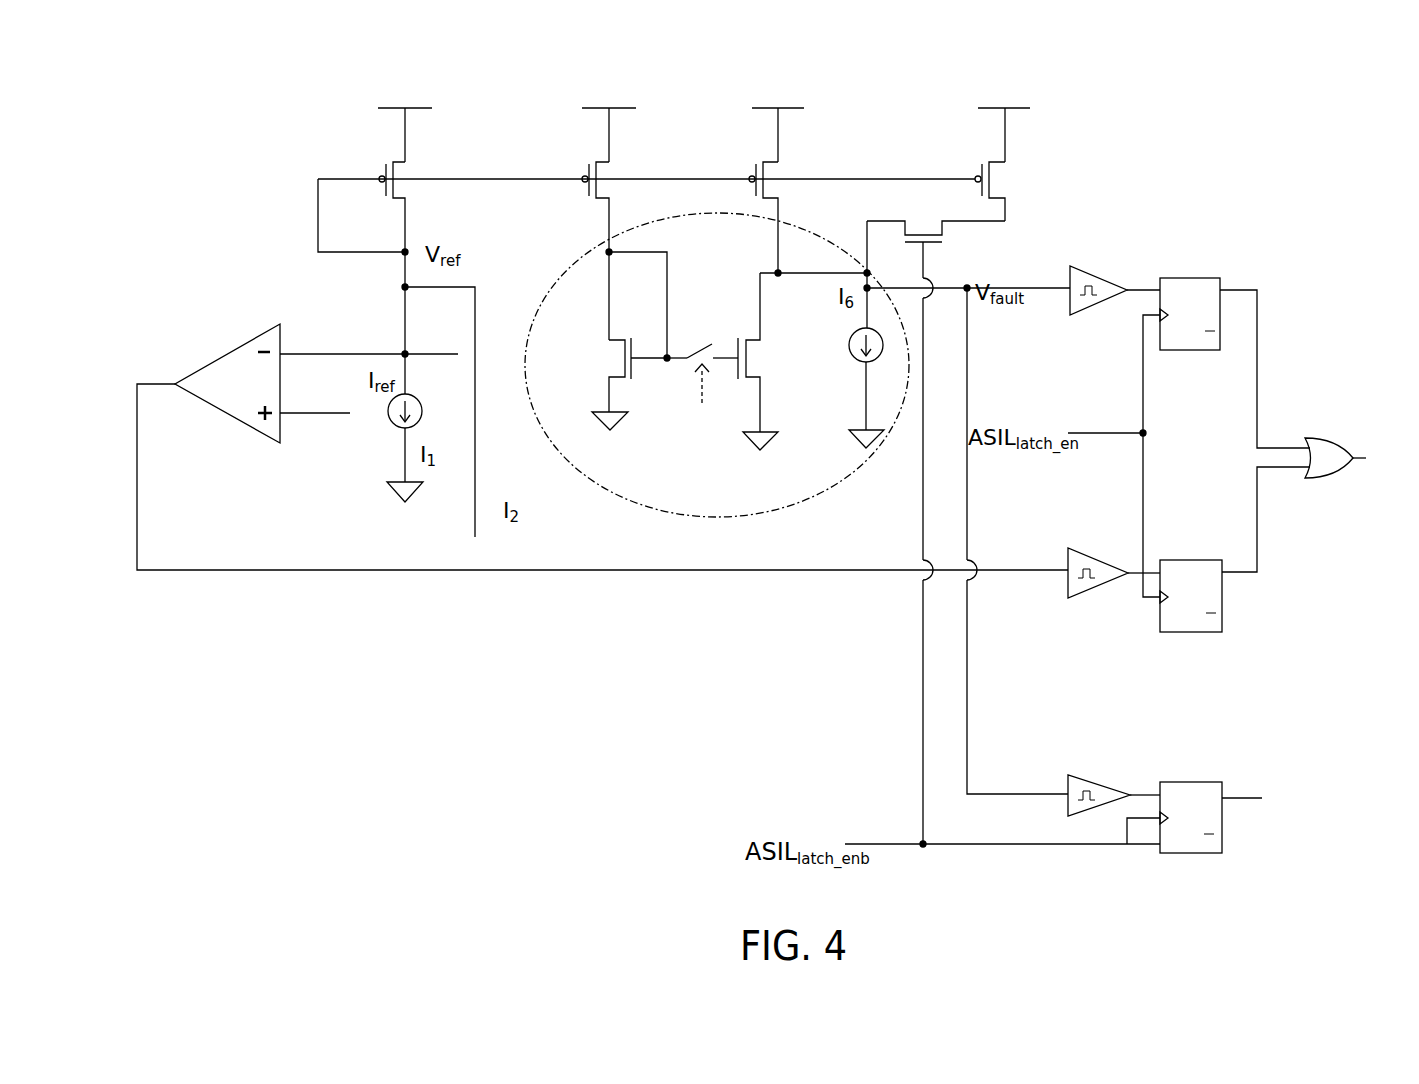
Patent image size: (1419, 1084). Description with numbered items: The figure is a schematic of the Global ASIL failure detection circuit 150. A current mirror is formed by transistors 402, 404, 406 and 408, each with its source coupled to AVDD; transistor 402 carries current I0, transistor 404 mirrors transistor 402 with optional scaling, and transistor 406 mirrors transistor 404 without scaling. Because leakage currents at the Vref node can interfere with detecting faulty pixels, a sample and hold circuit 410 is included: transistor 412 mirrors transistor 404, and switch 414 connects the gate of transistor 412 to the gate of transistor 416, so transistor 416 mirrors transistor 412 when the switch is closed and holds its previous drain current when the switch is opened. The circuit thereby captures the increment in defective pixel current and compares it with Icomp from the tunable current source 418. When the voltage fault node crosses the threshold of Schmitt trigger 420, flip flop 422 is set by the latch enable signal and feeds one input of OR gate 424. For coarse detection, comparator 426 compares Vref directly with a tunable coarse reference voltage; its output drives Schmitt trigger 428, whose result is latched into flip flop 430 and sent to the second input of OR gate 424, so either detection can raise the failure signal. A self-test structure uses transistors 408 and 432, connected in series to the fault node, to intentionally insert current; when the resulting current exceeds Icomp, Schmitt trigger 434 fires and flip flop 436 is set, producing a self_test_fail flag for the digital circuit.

The Global ASIL failure detection circuit 150 is at (222, 90).
The transistor 402 is at (393, 160).
The transistor 404 is at (596, 160).
The transistor 406 is at (763, 160).
The transistor 408 is at (989, 160).
The sample and hold circuit 410 is at (572, 284).
The transistor 412 is at (622, 378).
The switch 414 is at (708, 352).
The transistor 416 is at (752, 338).
The current source 418 is at (849, 344).
The Schmitt trigger 420 is at (1097, 276).
The flip flop 422 is at (1206, 278).
The OR gate 424 is at (1330, 437).
The comparator 426 is at (232, 350).
The Schmitt trigger 428 is at (1108, 556).
The flip flop 430 is at (1210, 560).
The transistor 432 is at (948, 228).
The Schmitt trigger 434 is at (1096, 776).
The flip flop 436 is at (1196, 782).